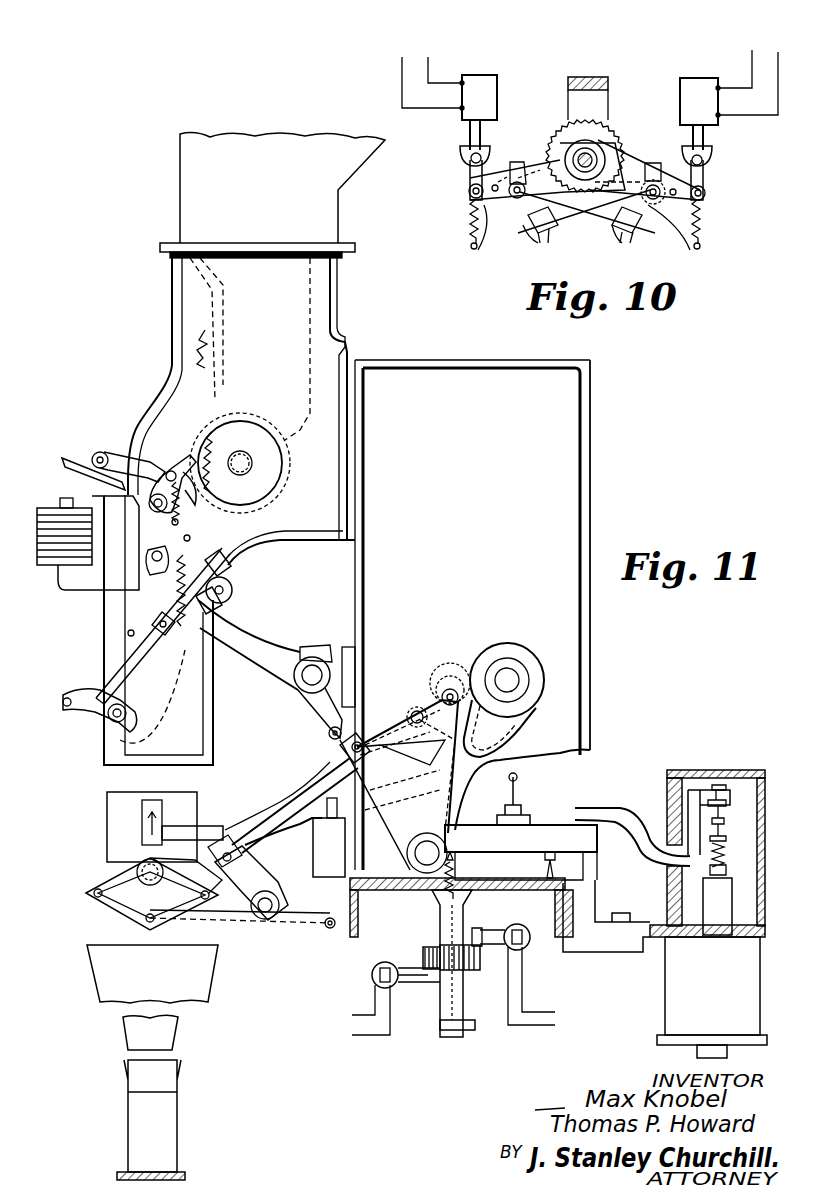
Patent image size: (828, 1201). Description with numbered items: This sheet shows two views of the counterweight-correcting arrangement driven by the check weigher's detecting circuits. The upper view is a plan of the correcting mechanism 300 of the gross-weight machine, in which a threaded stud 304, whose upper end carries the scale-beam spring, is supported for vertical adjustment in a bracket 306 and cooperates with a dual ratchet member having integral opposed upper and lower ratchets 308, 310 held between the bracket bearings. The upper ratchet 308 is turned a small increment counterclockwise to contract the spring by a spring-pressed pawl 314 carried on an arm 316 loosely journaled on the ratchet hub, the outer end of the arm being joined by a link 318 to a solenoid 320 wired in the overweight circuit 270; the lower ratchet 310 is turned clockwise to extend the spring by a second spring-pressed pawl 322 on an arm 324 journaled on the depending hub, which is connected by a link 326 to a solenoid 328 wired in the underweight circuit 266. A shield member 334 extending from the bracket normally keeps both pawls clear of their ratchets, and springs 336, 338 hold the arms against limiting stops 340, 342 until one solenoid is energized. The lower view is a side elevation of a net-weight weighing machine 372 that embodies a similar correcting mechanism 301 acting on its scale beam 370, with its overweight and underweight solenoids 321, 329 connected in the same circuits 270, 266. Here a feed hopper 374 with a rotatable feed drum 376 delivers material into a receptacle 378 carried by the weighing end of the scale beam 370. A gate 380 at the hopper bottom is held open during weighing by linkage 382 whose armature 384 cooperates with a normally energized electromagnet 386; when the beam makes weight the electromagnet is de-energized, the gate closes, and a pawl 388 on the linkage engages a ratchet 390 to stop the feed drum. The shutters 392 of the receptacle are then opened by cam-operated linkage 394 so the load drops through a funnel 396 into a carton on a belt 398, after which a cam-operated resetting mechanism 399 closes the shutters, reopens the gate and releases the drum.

In FIG. 10, the underweight circuit 266 is at (412, 83).
In FIG. 11, the underweight circuit 266 is at (562, 1022).
In FIG. 10, the overweight circuit 270 is at (766, 64).
In FIG. 11, the overweight circuit 270 is at (345, 1025).
In FIG. 10, the correcting mechanism 300 is at (650, 56).
In FIG. 11, the correcting mechanism 301 is at (428, 1036).
In FIG. 10, the threaded stud 304 is at (588, 157).
In FIG. 10, the bracket 306 is at (590, 76).
In FIG. 10, the upper ratchet 308 is at (620, 148).
In FIG. 10, the lower ratchet 310 is at (545, 118).
In FIG. 10, the spring-pressed pawl 314 is at (655, 162).
In FIG. 10, the arm 316 is at (622, 243).
In FIG. 10, the link 318 is at (705, 175).
In FIG. 10, the solenoid 320 is at (700, 78).
In FIG. 11, the overweight solenoid 321 is at (392, 960).
In FIG. 10, the spring-pressed pawl 322 is at (520, 160).
In FIG. 10, the arm 324 is at (478, 250).
In FIG. 10, the link 326 is at (465, 168).
In FIG. 10, the solenoid 328 is at (478, 72).
In FIG. 11, the underweight solenoid 329 is at (517, 924).
In FIG. 10, the shield member 334 is at (562, 198).
In FIG. 10, the spring 336 is at (702, 222).
In FIG. 10, the spring 338 is at (467, 222).
In FIG. 10, the limiting stop 340 is at (684, 241).
In FIG. 10, the limiting stop 342 is at (540, 243).
In FIG. 11, the scale beam 370 is at (272, 800).
In FIG. 11, the net-weight weighing machine 372 is at (630, 452).
In FIG. 11, the feed hopper 374 is at (170, 330).
In FIG. 11, the feed drum 376 is at (260, 440).
In FIG. 11, the receptacle 378 is at (112, 810).
In FIG. 11, the gate 380 is at (112, 741).
In FIG. 11, the linkage 382 is at (100, 678).
In FIG. 11, the armature 384 is at (82, 458).
In FIG. 11, the electromagnet 386 is at (45, 508).
In FIG. 11, the pawl 388 is at (193, 457).
In FIG. 11, the ratchet 390 is at (220, 432).
In FIG. 11, the shutters 392 is at (118, 922).
In FIG. 11, the cam-operated linkage 394 is at (388, 758).
In FIG. 11, the funnel 396 is at (152, 997).
In FIG. 11, the belt 398 is at (185, 1172).
In FIG. 11, the cam-operated resetting mechanism 399 is at (330, 640).